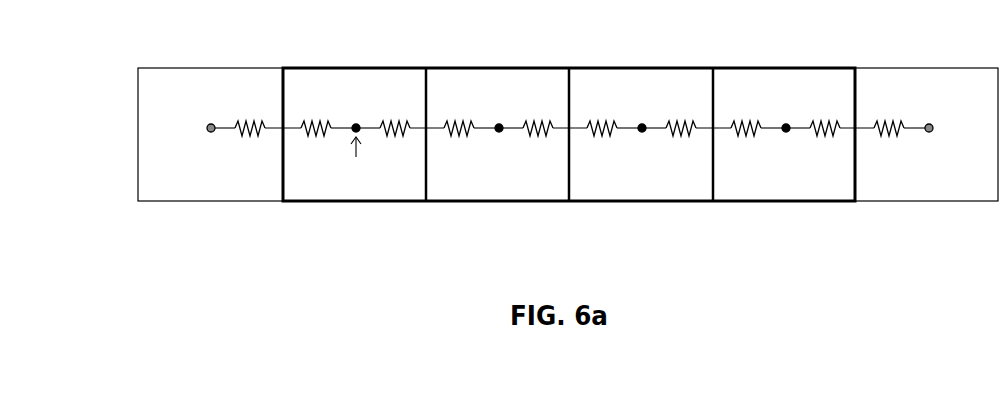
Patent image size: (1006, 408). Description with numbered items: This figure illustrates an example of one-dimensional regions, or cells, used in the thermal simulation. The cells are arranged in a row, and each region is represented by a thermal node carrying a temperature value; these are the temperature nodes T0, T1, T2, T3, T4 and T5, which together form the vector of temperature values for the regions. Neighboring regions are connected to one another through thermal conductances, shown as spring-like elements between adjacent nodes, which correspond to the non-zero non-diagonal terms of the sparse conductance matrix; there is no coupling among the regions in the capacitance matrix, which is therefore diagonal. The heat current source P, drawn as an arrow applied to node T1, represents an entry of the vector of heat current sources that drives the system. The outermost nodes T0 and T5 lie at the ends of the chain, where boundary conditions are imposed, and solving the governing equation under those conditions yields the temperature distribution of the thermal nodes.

The temperature node 0 (boundary) T0 is at (215, 111).
The temperature node 1 T1 is at (359, 111).
The temperature node 2 T2 is at (502, 111).
The temperature node 3 T3 is at (645, 111).
The temperature node 4 T4 is at (789, 111).
The temperature node 5 (boundary) T5 is at (932, 111).
The heat power input P is at (355, 169).